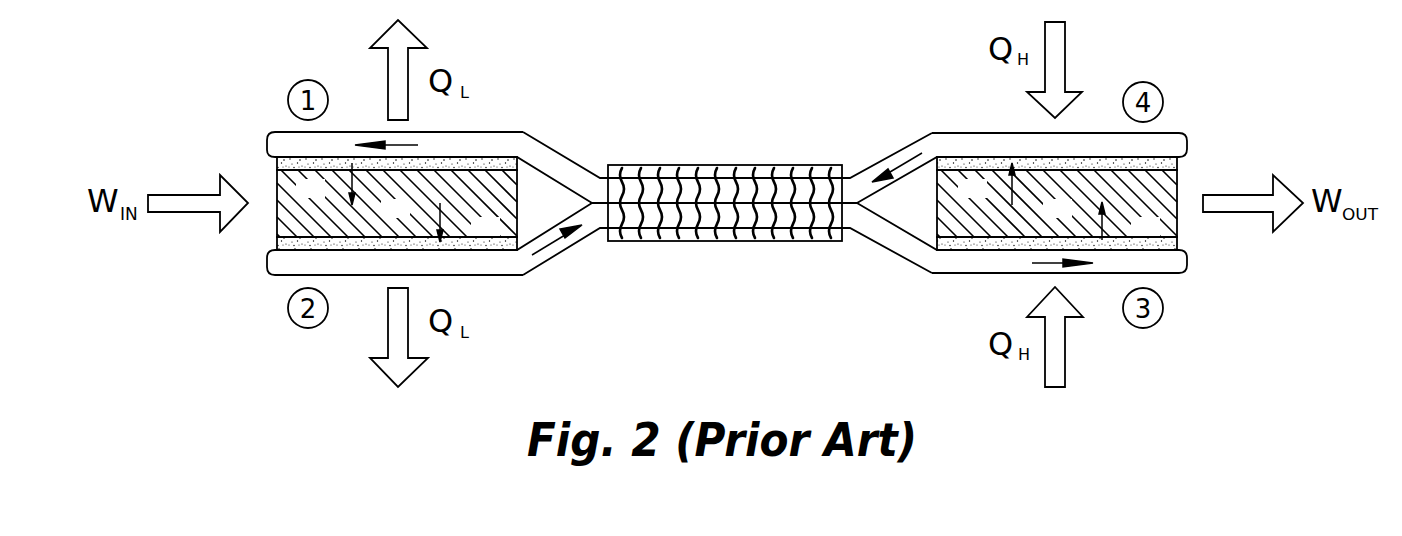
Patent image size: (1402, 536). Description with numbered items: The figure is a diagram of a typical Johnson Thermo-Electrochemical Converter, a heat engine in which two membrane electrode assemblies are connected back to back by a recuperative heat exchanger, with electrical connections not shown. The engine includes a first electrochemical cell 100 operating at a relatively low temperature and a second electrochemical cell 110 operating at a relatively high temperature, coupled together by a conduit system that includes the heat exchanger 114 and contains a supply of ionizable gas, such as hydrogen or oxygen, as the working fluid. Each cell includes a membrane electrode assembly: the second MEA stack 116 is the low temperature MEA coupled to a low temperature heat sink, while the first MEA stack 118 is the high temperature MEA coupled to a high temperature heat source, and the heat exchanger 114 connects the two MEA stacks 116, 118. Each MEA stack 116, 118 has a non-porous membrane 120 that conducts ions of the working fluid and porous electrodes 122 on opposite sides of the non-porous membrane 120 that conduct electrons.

The first electrochemical cell 100 is at (321, 210).
The second electrochemical cell 110 is at (1132, 197).
The heat exchanger 114 is at (727, 172).
The second MEA stack 116 is at (277, 185).
The first MEA stack 118 is at (1177, 222).
The non-porous membrane 120 is at (277, 203).
The porous electrodes 122 is at (277, 158).